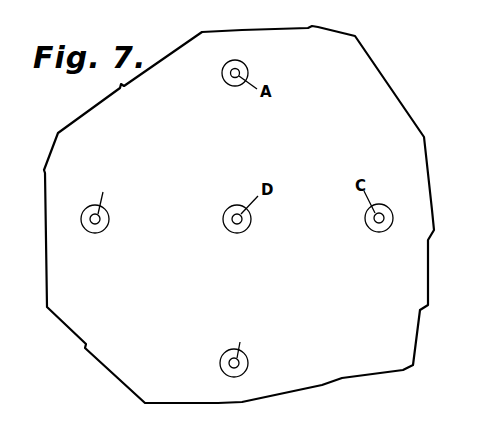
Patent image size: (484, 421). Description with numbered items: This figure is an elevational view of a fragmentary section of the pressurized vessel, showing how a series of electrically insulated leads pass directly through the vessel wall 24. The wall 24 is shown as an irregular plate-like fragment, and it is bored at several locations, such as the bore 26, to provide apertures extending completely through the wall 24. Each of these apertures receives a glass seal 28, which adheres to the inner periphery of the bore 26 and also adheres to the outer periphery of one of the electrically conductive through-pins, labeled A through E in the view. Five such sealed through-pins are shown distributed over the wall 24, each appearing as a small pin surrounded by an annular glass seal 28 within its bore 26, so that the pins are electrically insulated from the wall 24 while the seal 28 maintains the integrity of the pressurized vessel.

The wall of the vessel 24 is at (76, 136).
The bore 26 is at (239, 364).
The glass seal 28 is at (97, 233).